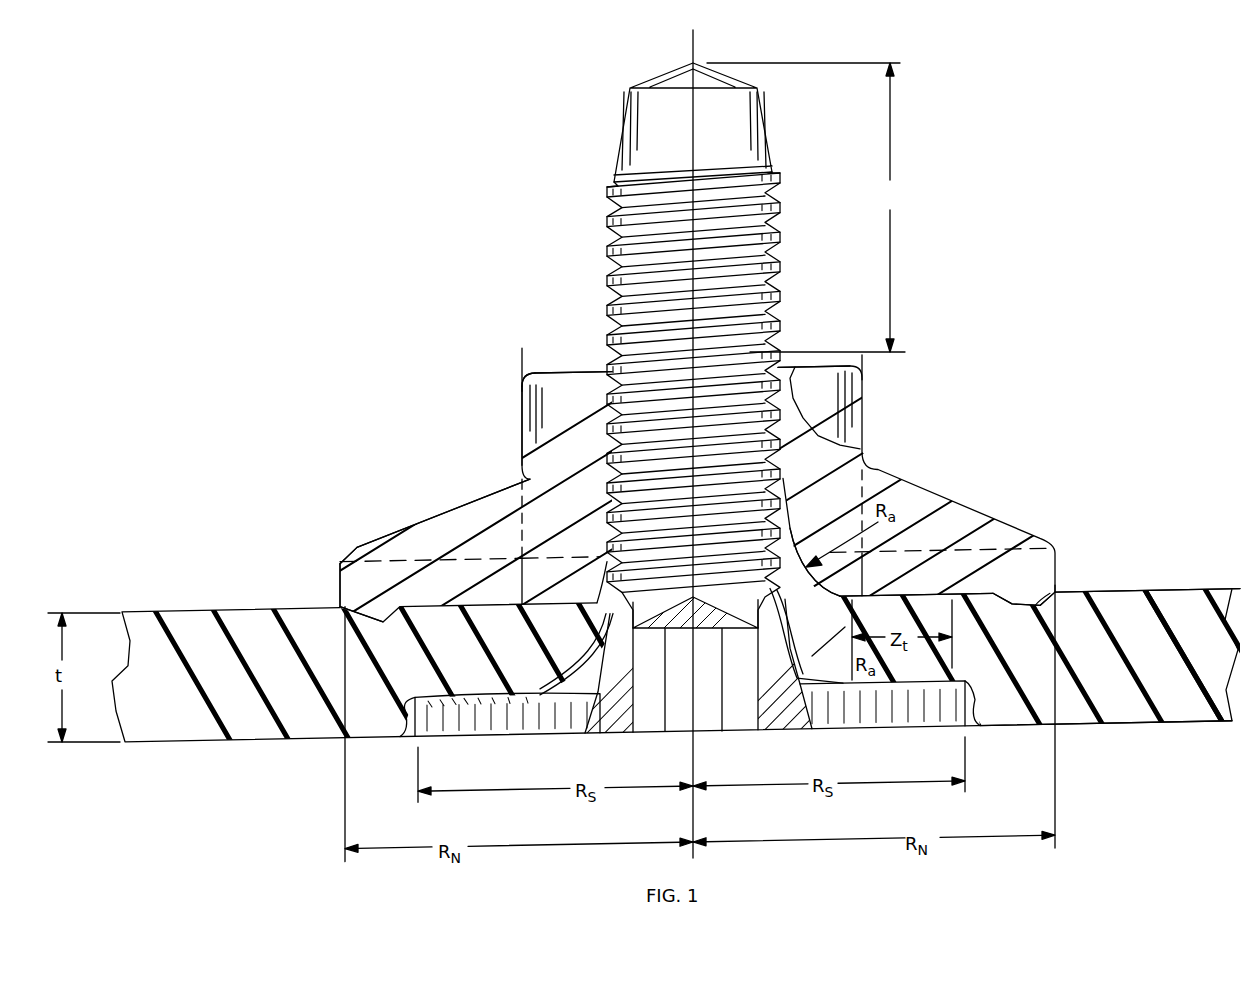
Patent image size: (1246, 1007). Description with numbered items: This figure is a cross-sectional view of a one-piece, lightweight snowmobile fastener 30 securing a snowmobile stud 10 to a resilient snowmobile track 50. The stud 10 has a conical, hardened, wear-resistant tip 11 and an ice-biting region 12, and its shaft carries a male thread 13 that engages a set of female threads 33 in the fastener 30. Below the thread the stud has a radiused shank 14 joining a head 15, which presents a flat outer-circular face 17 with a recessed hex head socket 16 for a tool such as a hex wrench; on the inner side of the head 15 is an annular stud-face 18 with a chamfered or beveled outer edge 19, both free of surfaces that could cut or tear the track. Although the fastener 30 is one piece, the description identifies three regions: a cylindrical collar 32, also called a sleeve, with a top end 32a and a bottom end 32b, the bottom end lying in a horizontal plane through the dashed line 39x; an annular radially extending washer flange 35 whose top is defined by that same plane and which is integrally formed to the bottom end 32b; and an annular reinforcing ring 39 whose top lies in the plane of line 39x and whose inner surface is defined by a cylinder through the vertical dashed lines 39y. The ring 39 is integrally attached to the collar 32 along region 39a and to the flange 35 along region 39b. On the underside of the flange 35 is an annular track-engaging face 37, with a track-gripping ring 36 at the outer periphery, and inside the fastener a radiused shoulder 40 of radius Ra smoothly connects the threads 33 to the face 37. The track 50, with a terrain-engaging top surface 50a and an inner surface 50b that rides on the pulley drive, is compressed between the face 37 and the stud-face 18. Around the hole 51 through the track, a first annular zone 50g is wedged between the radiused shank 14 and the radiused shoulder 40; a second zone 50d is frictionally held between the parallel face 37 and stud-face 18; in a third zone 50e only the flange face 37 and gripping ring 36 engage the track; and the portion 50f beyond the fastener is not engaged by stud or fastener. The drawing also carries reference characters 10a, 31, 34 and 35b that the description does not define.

The snowmobile stud 10 is at (674, 403).
The longitudinal axis of screw 10a is at (693, 45).
The conical tip 11 is at (662, 76).
The ice-biting region 12 is at (806, 207).
The male thread 13 is at (780, 271).
The radiused shank 14 is at (809, 658).
The head 15 is at (860, 733).
The recessed hex head socket 16 is at (753, 710).
The flat outer-circular face 17 is at (510, 745).
The annular stud-face 18 is at (488, 692).
The chamfered outer edge 19 is at (402, 728).
The snowmobile fastener 30 is at (705, 524).
The collar outer surface 31 is at (522, 396).
The cylindrical collar 32 is at (810, 376).
The top end of collar 32a is at (596, 372).
The bottom end of collar 32b is at (568, 554).
The female threads 33 is at (560, 418).
The collar extension line 34 is at (545, 558).
The washer flange 35 is at (342, 601).
The flange outer surface 35b is at (485, 560).
The track-gripping ring 36 is at (1060, 586).
The annular track-engaging face 37 is at (568, 395).
The annular reinforcing ring 39 is at (437, 527).
The attachment region to collar 39a is at (518, 500).
The attachment region to flange 39b is at (383, 558).
The horizontal dashed line 39x is at (338, 552).
The vertical dashed lines 39y is at (522, 352).
The radiused shoulder 40 is at (803, 547).
The snowmobile track 50 is at (679, 632).
The top surface of track 50a is at (1177, 592).
The inner surface of track 50b is at (1077, 722).
The second annular zone 50d is at (928, 600).
The third annular zone 50e is at (1015, 713).
The unengaged track portion 50f is at (1147, 683).
The first annular zone 50g is at (805, 575).
The hole 51 is at (617, 587).